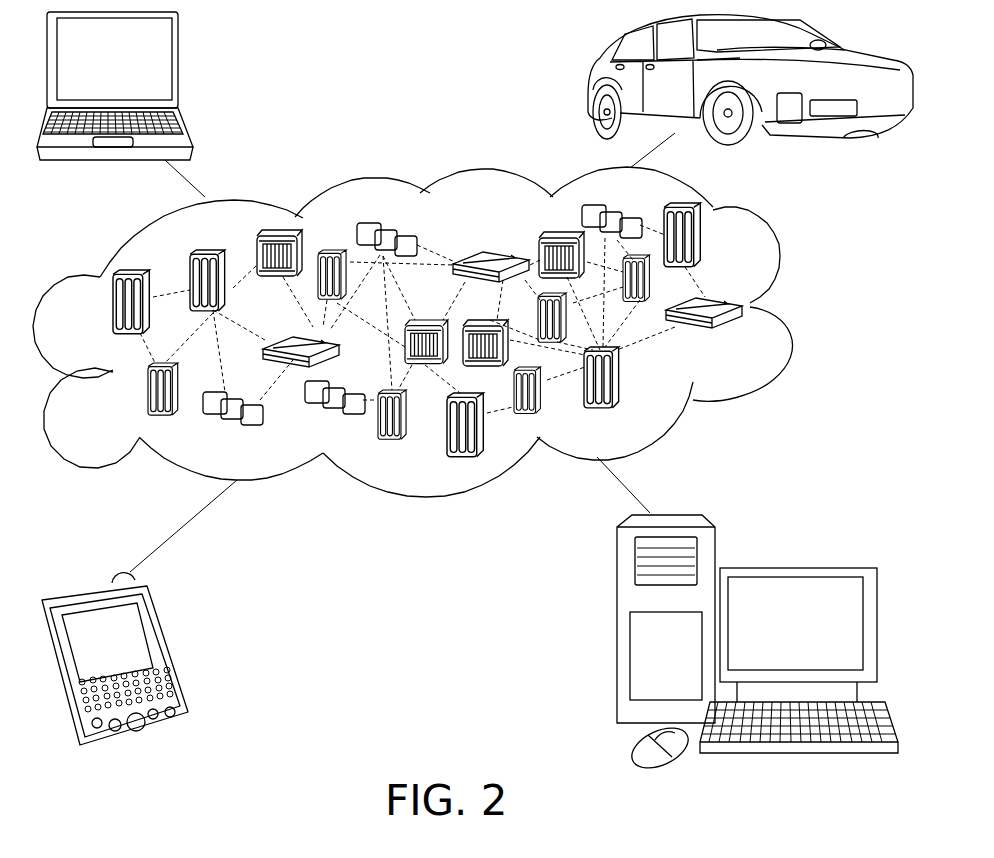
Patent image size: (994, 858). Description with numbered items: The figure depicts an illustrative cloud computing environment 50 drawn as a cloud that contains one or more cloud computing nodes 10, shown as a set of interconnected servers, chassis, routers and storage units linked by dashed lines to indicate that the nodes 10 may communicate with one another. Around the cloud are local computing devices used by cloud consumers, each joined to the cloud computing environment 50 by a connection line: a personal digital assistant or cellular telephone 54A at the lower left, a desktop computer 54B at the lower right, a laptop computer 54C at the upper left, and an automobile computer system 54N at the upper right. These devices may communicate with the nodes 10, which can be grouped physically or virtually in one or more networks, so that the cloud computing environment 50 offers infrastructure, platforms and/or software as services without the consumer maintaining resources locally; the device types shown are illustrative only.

The cloud computing node 10 is at (742, 338).
The cloud computing environment 50 is at (797, 310).
The personal digital assistant (PDA) or cellular telephone 54A is at (170, 650).
The desktop computer 54B is at (793, 567).
The laptop computer 54C is at (177, 70).
The automobile computer system 54N is at (590, 80).